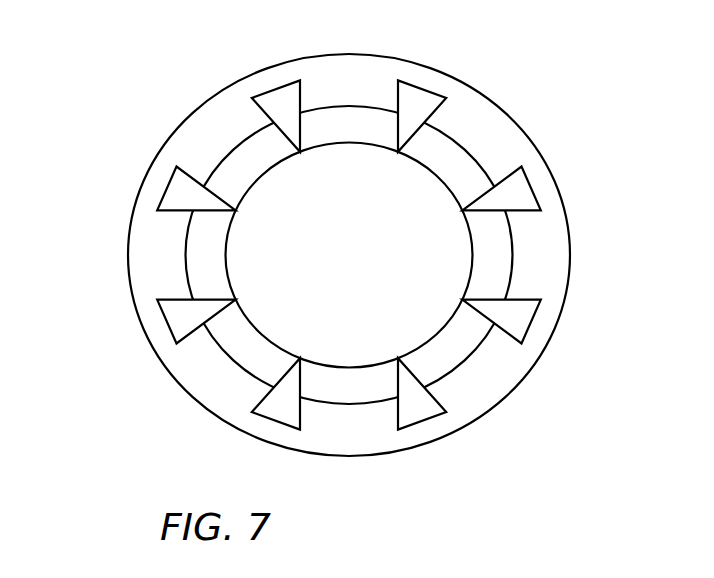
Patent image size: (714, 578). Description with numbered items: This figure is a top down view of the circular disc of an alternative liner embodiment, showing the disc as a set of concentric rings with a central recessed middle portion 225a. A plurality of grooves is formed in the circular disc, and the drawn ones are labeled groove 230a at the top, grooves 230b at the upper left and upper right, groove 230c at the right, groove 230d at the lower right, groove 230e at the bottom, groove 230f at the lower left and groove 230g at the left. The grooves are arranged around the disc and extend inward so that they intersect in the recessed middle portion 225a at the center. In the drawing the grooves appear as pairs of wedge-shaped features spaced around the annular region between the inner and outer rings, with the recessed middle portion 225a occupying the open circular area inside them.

The recessed middle portion 225a is at (410, 280).
The groove 230a is at (349, 66).
The groove 230b is at (209, 128).
The groove 230c is at (527, 238).
The groove 230d is at (489, 382).
The groove 230e is at (352, 435).
The groove 230f is at (209, 383).
The groove 230g is at (170, 247).